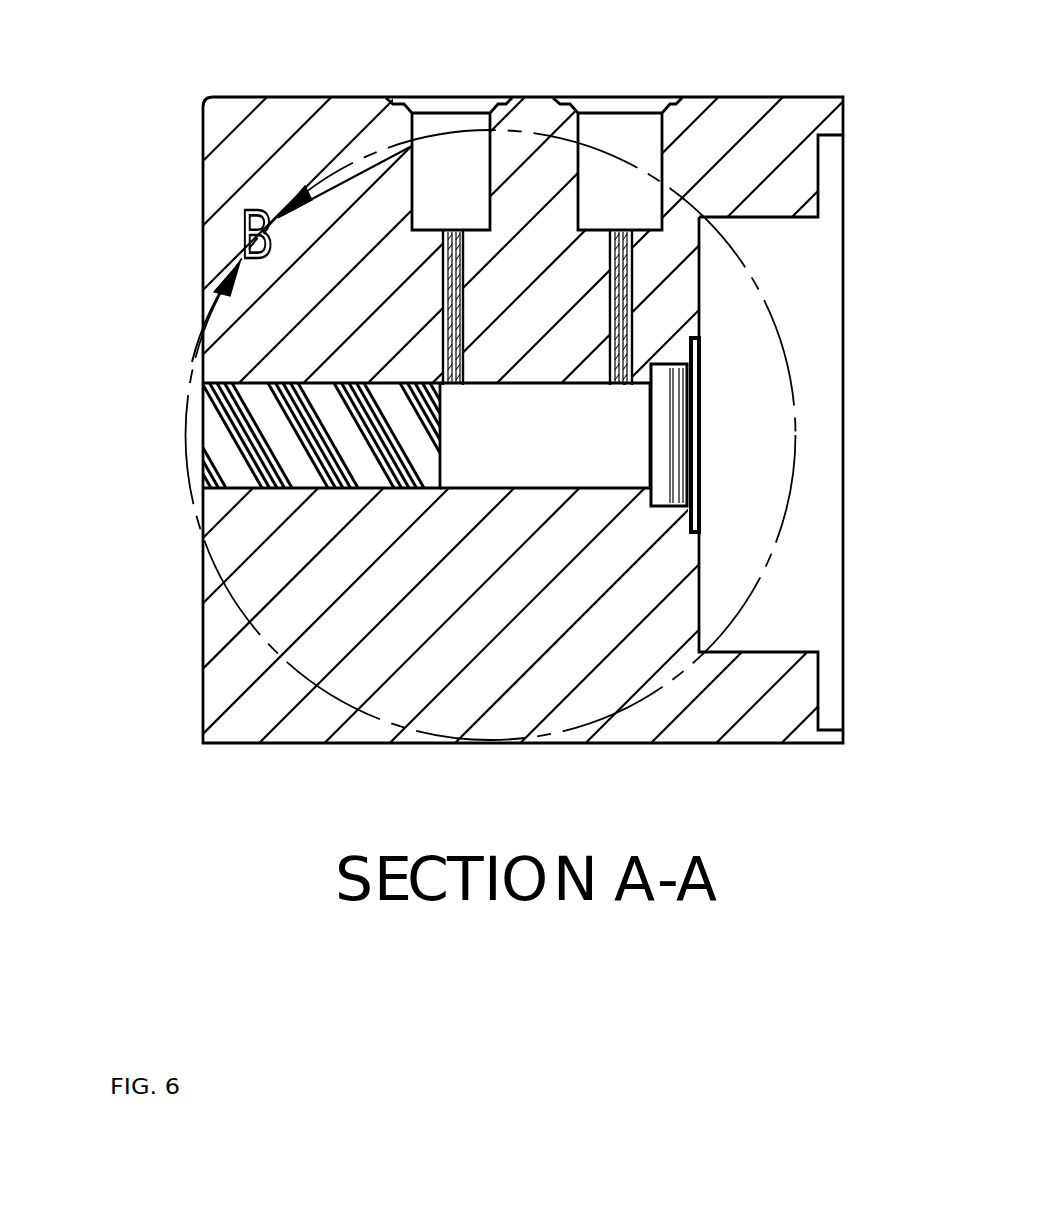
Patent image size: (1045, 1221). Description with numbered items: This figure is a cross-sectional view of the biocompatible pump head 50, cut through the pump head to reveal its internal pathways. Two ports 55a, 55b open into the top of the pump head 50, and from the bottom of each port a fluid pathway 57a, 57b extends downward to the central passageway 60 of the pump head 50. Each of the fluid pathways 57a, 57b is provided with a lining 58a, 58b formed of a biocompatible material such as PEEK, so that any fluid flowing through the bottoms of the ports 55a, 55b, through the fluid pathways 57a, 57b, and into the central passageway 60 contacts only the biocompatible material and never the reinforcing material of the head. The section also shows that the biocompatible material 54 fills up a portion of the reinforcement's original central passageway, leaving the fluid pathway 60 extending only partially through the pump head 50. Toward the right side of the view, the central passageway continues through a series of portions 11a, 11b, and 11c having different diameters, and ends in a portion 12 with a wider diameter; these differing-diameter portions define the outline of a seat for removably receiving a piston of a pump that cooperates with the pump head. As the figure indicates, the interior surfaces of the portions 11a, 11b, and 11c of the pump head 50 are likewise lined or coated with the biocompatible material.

The biocompatible pump head 50 is at (150, 126).
The biocompatible material 54 is at (263, 453).
The port 55a is at (433, 125).
The port 55b is at (610, 130).
The fluid pathway 57a is at (442, 298).
The fluid pathway 57b is at (633, 273).
The lining 58a is at (463, 295).
The lining 58b is at (633, 333).
The central passageway 60 is at (550, 441).
The portion of the central passageway 11a is at (660, 510).
The portion of the central passageway 11b is at (672, 507).
The portion of the central passageway 11c is at (694, 535).
The portion with a wider diameter 12 is at (793, 583).